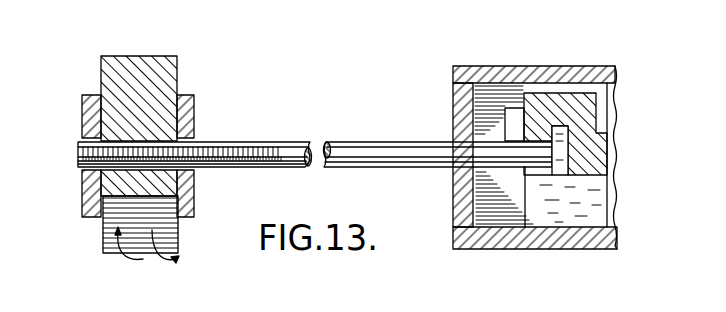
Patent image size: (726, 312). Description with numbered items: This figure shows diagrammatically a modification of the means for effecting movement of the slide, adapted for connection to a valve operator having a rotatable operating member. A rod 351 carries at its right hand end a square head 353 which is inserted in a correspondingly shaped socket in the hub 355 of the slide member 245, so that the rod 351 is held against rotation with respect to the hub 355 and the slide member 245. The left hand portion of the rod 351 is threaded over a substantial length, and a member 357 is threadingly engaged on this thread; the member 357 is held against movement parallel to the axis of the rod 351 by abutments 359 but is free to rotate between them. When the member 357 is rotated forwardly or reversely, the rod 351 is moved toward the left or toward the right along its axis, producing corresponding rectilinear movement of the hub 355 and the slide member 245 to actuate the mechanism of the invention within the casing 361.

The member 357 is at (140, 65).
The abutments 359 is at (88, 117).
The rod 351 is at (332, 142).
The casing 361 is at (456, 110).
The slide member 245 is at (614, 200).
The hub 355 is at (556, 101).
The square head 353 is at (559, 177).